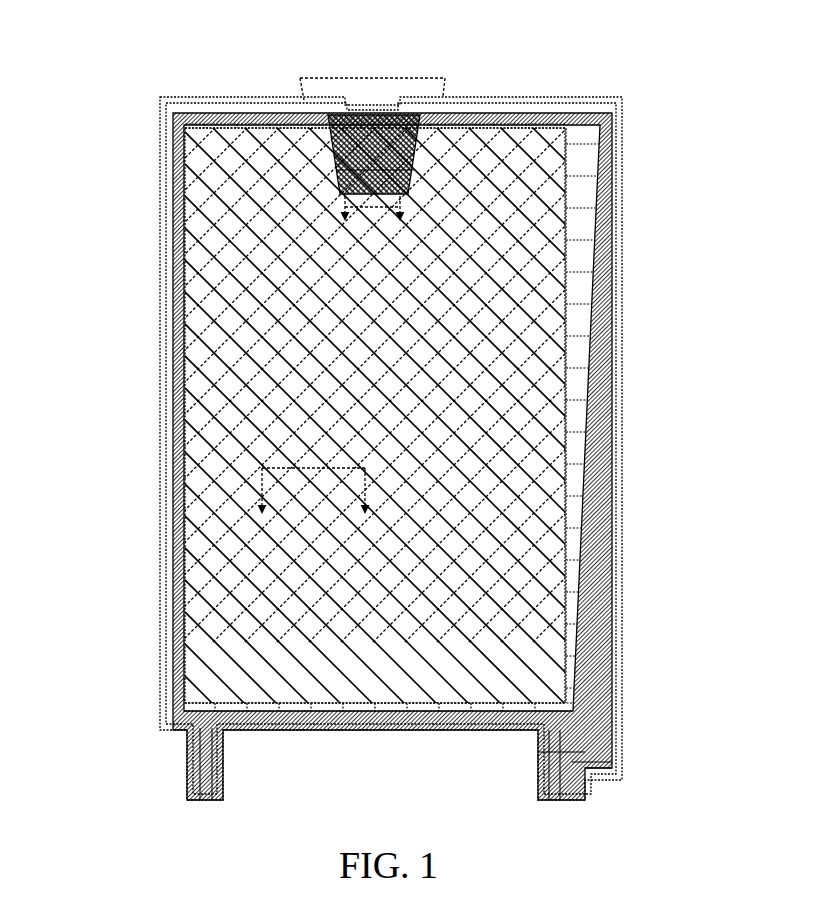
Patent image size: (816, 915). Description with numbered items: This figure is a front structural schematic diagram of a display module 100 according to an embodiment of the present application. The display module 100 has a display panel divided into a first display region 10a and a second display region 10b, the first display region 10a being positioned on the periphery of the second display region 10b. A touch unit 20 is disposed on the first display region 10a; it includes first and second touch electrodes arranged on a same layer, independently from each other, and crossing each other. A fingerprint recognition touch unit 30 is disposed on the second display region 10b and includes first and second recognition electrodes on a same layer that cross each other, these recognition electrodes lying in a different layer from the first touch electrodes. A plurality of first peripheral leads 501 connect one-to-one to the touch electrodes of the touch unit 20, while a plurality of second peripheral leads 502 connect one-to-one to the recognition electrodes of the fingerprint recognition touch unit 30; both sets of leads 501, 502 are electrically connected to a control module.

The display module 100 is at (150, 64).
The first display region 10a is at (627, 242).
The second display region 10b is at (445, 80).
The touch unit 20 is at (160, 258).
The fingerprint recognition touch unit 30 is at (320, 125).
The first peripheral leads 501 is at (622, 372).
The second peripheral leads 502 is at (420, 130).